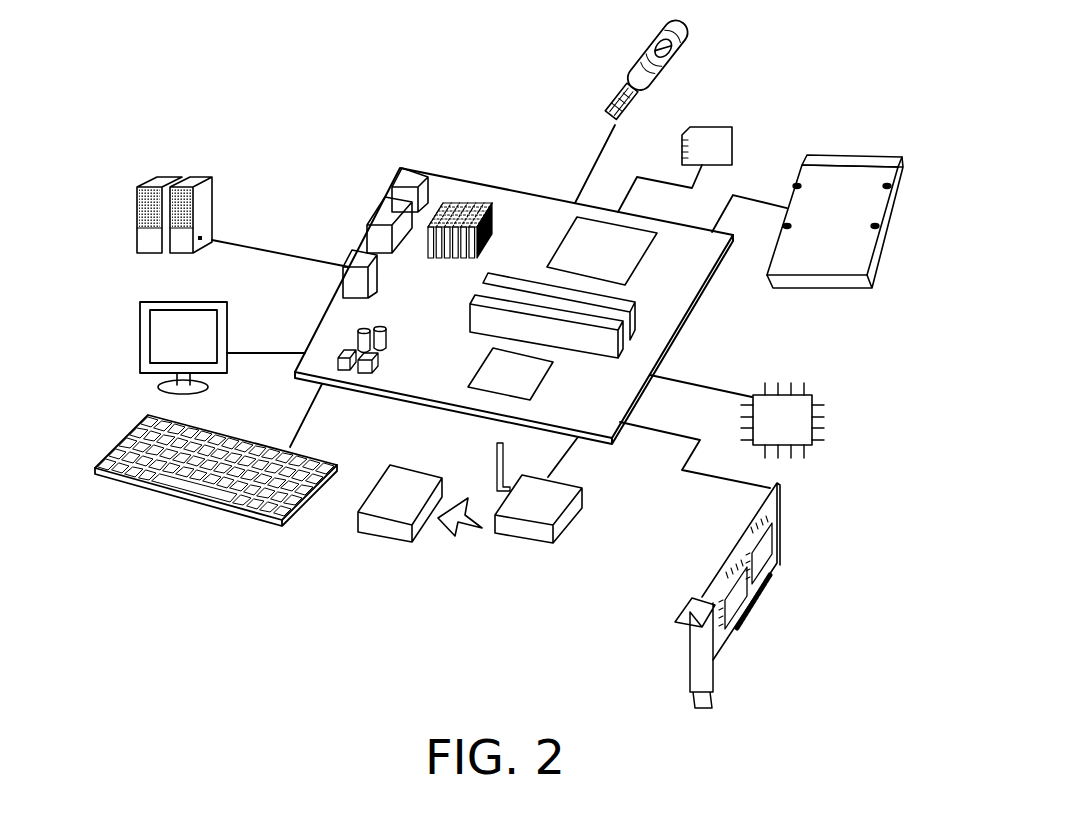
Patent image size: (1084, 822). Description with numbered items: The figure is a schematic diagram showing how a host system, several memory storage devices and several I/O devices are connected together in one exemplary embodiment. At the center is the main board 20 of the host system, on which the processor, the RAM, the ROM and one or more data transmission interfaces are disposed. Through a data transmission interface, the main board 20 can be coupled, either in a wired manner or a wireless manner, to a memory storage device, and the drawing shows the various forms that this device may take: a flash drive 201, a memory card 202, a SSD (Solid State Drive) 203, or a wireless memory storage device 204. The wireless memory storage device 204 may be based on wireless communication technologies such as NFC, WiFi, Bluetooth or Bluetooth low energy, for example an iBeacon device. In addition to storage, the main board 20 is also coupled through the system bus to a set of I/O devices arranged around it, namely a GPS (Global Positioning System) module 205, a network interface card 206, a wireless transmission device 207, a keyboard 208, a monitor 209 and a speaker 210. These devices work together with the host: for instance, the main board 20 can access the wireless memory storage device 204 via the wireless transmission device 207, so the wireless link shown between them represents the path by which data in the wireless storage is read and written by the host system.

The main board 20 is at (515, 210).
The flash drive 201 is at (640, 63).
The memory card 202 is at (733, 132).
The SSD (Solid State Drive) 203 is at (852, 154).
The wireless memory storage device 204 is at (380, 484).
The GPS (Global Positioning System) module 205 is at (824, 420).
The network interface card 206 is at (780, 540).
The wireless transmission device 207 is at (570, 527).
The keyboard 208 is at (218, 506).
The monitor 209 is at (140, 353).
The speaker 210 is at (137, 240).